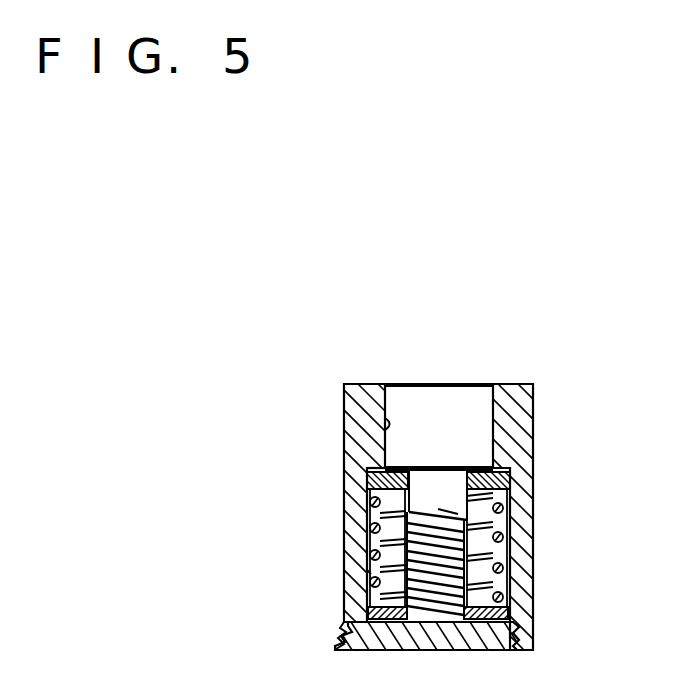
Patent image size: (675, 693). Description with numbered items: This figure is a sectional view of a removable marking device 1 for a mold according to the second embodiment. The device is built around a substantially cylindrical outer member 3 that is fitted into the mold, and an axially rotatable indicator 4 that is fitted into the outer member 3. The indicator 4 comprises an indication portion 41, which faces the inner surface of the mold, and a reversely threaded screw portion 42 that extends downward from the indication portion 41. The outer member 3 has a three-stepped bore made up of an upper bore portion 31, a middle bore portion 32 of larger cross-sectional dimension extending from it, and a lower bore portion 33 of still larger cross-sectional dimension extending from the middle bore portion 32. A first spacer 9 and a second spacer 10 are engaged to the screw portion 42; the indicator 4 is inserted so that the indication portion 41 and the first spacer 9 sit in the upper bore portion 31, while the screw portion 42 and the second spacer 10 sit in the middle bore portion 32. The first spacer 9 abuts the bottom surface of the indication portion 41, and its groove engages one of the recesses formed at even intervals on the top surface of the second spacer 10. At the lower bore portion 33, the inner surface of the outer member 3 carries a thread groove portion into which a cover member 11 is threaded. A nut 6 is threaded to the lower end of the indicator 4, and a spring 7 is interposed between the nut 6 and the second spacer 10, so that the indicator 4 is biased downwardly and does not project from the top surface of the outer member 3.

The removable marking device 1 is at (487, 337).
The outer member 3 is at (524, 540).
The indicator 4 is at (606, 442).
The indication portion 41 is at (467, 440).
The screw portion 42 is at (440, 512).
The nut 6 is at (500, 613).
The spring 7 is at (504, 568).
The first spacer 9 is at (388, 458).
The second spacer 10 is at (373, 490).
The cover member 11 is at (525, 645).
The upper bore portion 31 is at (388, 428).
The middle bore portion 32 is at (377, 572).
The lower bore portion 33 is at (352, 642).